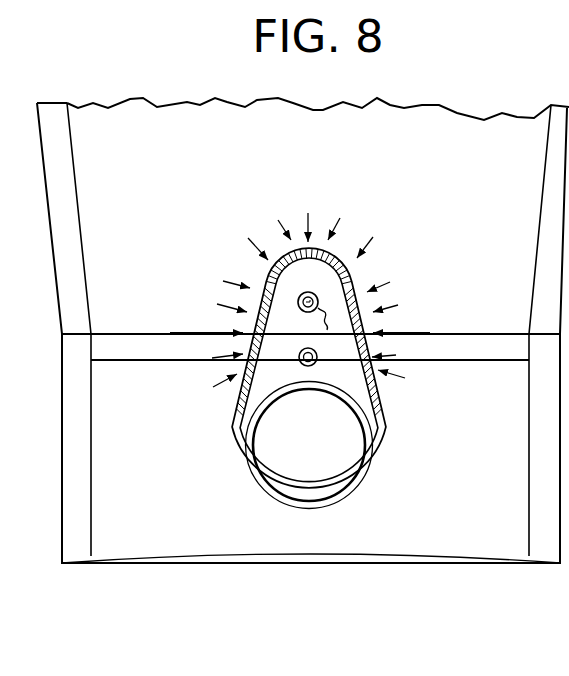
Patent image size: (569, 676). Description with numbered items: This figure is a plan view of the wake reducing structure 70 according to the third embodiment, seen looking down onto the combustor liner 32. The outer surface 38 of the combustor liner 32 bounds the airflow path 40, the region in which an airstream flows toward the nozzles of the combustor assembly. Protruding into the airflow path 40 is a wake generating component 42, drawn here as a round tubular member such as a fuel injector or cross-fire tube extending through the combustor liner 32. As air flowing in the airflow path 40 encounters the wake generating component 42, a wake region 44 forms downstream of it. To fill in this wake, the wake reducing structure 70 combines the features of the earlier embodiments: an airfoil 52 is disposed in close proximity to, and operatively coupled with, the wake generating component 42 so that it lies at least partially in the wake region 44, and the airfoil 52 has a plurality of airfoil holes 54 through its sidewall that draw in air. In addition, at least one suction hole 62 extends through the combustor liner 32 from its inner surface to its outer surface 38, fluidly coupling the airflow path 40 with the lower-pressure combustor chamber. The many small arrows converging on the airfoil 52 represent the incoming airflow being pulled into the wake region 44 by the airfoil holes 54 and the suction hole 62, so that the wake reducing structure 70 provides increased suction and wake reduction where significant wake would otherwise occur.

The combustor liner 32 is at (172, 517).
The outer surface 38 is at (481, 228).
The airflow path 40 is at (254, 631).
The wake generating component 42 is at (378, 476).
The wake region 44 is at (247, 267).
The airfoil 52 is at (232, 398).
The airfoil holes 54 is at (350, 274).
The suction hole 62 is at (315, 354).
The wake reducing structure 70 is at (350, 232).